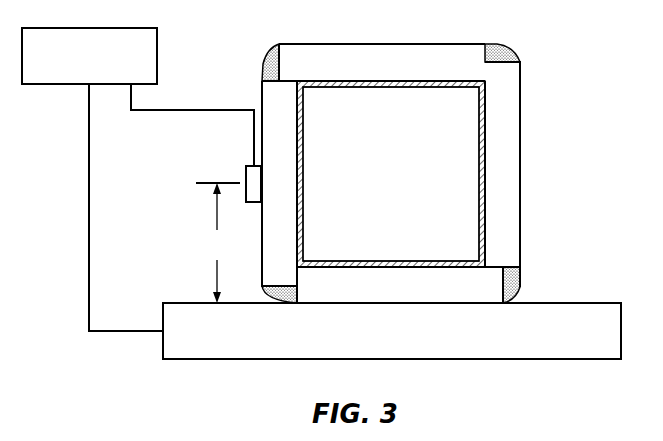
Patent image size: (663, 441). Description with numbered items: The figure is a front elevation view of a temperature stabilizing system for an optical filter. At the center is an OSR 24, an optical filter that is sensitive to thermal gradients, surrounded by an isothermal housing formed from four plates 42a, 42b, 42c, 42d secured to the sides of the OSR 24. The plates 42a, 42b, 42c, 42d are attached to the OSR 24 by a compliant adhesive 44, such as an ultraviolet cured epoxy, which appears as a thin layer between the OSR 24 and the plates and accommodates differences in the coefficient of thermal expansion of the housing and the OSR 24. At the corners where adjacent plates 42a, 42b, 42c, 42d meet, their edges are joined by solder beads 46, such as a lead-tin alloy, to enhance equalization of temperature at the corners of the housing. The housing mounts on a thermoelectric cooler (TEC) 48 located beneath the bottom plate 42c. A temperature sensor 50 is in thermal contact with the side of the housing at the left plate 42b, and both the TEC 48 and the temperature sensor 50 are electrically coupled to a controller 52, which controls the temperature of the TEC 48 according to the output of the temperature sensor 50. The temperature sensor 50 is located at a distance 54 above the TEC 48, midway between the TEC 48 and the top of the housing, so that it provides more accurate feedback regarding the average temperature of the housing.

The OSR 24 is at (403, 183).
The plate 42a is at (390, 73).
The plate 42b is at (297, 258).
The plate 42c is at (428, 296).
The plate 42d is at (518, 165).
The compliant adhesive 44 is at (485, 122).
The solder bead 46 is at (264, 60).
The thermoelectric cooler 48 is at (424, 340).
The temperature sensor 50 is at (246, 178).
The controller 52 is at (78, 78).
The distance 54 is at (218, 243).